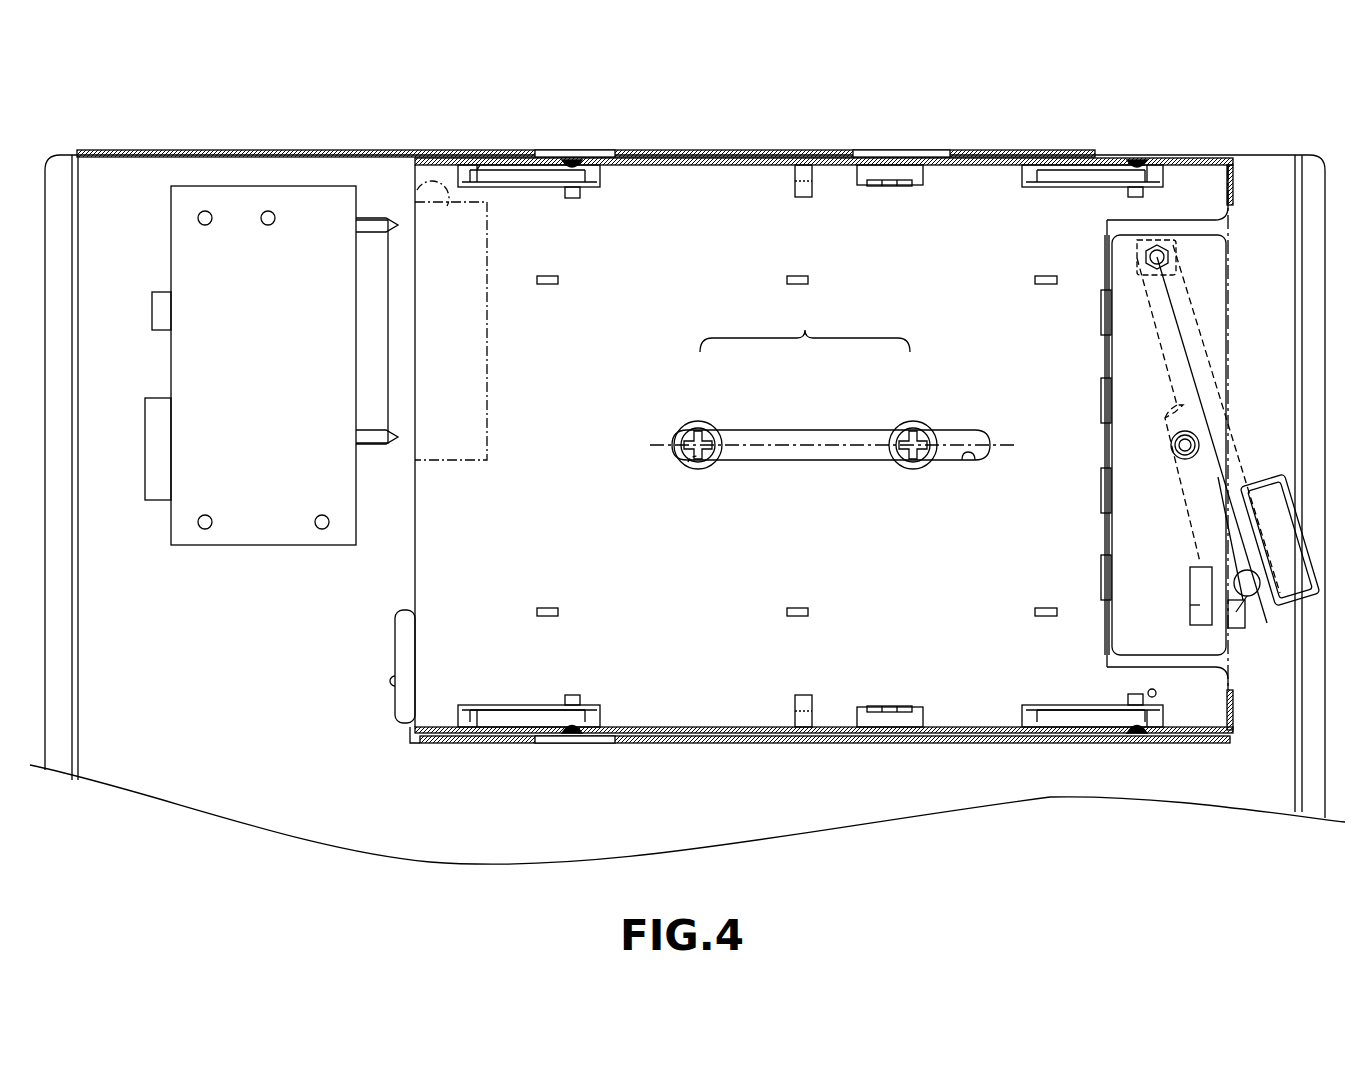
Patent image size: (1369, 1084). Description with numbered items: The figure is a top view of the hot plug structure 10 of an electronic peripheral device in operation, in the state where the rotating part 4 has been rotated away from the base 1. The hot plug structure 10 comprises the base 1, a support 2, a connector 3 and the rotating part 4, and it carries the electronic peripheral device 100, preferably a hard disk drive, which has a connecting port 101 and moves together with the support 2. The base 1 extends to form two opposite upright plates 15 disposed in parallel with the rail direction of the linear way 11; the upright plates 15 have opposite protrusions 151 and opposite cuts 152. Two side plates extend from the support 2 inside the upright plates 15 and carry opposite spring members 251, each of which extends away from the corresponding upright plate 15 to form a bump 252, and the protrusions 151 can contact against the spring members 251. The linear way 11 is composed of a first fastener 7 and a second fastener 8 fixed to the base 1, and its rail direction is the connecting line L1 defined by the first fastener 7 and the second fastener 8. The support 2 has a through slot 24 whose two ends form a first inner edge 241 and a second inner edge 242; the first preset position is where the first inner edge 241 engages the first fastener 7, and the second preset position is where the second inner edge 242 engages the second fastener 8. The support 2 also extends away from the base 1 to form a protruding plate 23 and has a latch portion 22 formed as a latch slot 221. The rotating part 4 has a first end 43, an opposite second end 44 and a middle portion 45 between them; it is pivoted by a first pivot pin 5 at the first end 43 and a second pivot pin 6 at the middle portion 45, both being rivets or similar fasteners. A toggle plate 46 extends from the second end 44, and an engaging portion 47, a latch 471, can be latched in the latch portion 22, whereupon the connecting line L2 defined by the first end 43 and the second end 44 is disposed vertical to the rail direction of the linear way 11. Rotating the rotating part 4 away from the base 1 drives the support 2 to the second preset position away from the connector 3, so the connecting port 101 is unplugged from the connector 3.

The base 1 is at (1175, 798).
The support 2 is at (432, 560).
The connector 3 is at (372, 236).
The rotating part 4 is at (1214, 330).
The first pivot pin 5 is at (1150, 250).
The second pivot pin 6 is at (1188, 445).
The first fastener 7 is at (912, 423).
The second fastener 8 is at (700, 423).
The hot plug structure 10 is at (260, 126).
The linear way 11 is at (805, 387).
The upright plates 15 is at (478, 157).
The latch portion 22 is at (1186, 585).
The protruding plate 23 is at (1215, 258).
The through slot 24 is at (818, 462).
The first end 43 is at (1112, 242).
The second end 44 is at (1236, 612).
The middle portion 45 is at (1167, 410).
The toggle plate 46 is at (1275, 527).
The engaging portion 47 is at (1254, 590).
The electronic peripheral device 100 is at (1234, 160).
The connecting port 101 is at (432, 172).
The protrusions 151 is at (492, 186).
The cuts 152 is at (540, 157).
The latch slot 221 is at (1196, 605).
The first inner edge 241 is at (963, 462).
The second inner edge 242 is at (704, 464).
The spring members 251 is at (522, 176).
The bump 252 is at (575, 190).
The latch 471 is at (1238, 614).
The connecting line L1 is at (1035, 445).
The connecting line L2 is at (1275, 640).